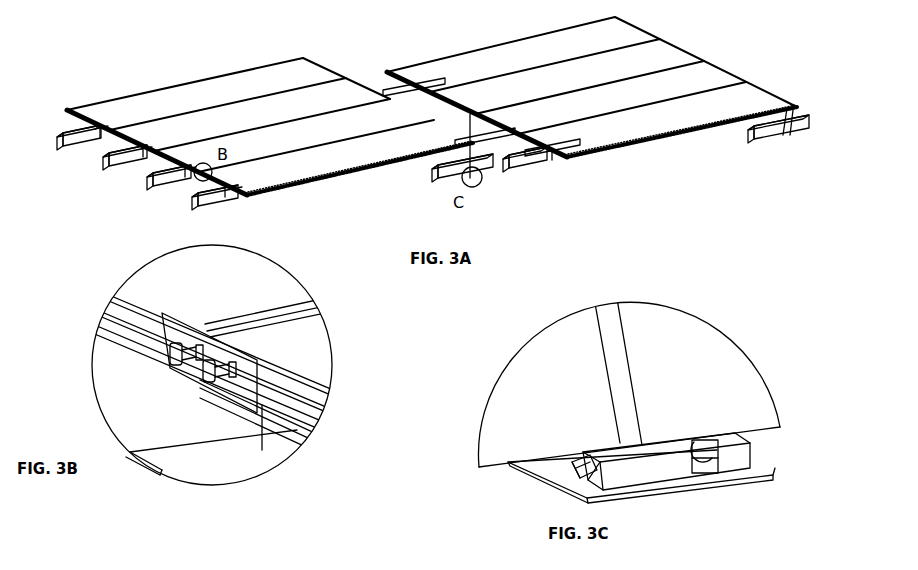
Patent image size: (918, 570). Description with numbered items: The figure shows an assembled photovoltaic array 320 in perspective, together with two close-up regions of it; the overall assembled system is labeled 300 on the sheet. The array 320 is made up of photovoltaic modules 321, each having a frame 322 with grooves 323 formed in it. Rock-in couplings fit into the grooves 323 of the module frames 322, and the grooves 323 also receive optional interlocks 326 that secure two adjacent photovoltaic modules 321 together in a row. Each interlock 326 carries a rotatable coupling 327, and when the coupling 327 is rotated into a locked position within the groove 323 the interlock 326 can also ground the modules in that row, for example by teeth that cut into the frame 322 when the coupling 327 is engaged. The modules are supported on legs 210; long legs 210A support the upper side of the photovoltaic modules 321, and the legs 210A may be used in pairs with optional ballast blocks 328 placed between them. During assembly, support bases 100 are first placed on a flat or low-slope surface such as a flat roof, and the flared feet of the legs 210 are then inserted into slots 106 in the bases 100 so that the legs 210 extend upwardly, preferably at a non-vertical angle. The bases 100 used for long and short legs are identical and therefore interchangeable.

In FIG. 3C, the support base 100 is at (717, 480).
In FIG. 3C, the slot 106 is at (585, 464).
In FIG. 3A, the leg 210 is at (143, 167).
In FIG. 3A, the long leg 210A is at (787, 115).
In FIG. 3C, the long leg 210A is at (617, 367).
In FIG. 3A, the solar panel array system 300 is at (103, 145).
In FIG. 3A, the array 320 is at (676, 244).
In FIG. 3A, the photovoltaic module 321 is at (678, 55).
In FIG. 3A, the frame 322 is at (337, 73).
In FIG. 3B, the frame 322 is at (273, 358).
In FIG. 3A, the groove 323 is at (500, 133).
In FIG. 3B, the groove 323 is at (300, 410).
In FIG. 3B, the interlock 326 is at (262, 405).
In FIG. 3B, the rotatable coupling 327 is at (212, 333).
In FIG. 3A, the ballast block 328 is at (210, 206).
In FIG. 3C, the ballast block 328 is at (512, 387).